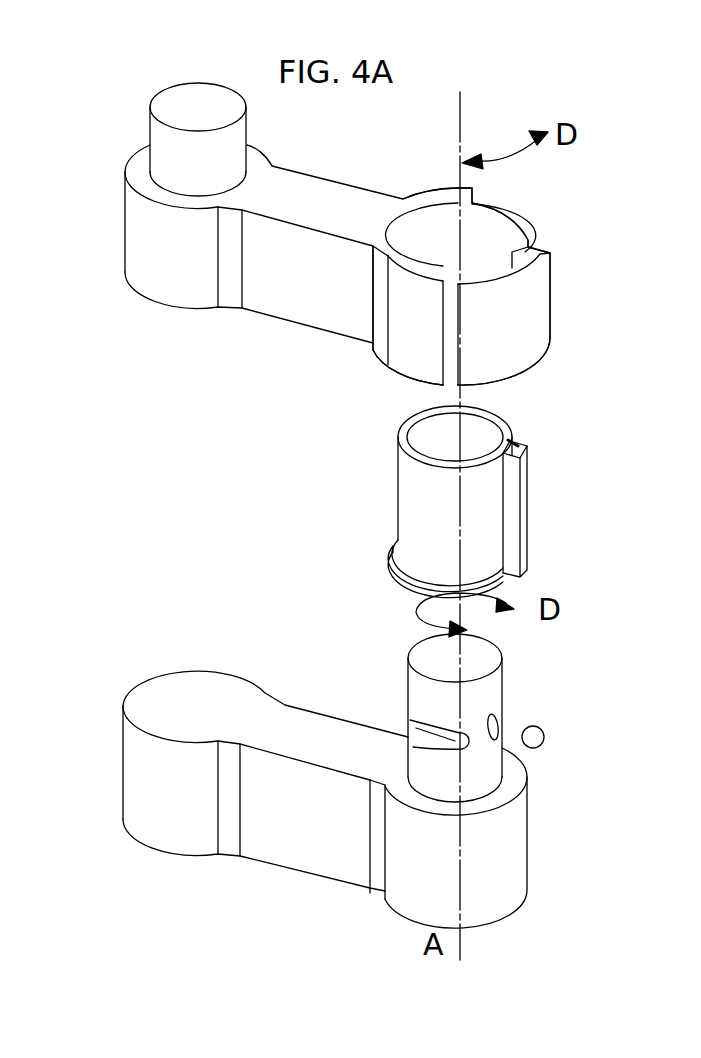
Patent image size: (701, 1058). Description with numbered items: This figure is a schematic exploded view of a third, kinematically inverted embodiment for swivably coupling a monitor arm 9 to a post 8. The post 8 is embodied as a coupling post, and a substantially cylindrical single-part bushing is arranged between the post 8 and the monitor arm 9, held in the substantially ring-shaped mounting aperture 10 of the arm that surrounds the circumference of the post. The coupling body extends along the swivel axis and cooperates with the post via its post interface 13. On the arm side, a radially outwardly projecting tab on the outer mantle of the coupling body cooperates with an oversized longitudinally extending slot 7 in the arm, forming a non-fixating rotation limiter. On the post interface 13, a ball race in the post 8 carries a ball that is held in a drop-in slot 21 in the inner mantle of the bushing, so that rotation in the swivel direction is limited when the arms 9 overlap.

The longitudinally extending slot 7 is at (427, 223).
The post embodied as coupling post 8 is at (195, 148).
The monitor arm 9 is at (340, 268).
The mounting aperture of monitor arm 10 is at (488, 247).
The post interface of coupling 13 is at (437, 442).
The slot of traveler 21 is at (515, 440).